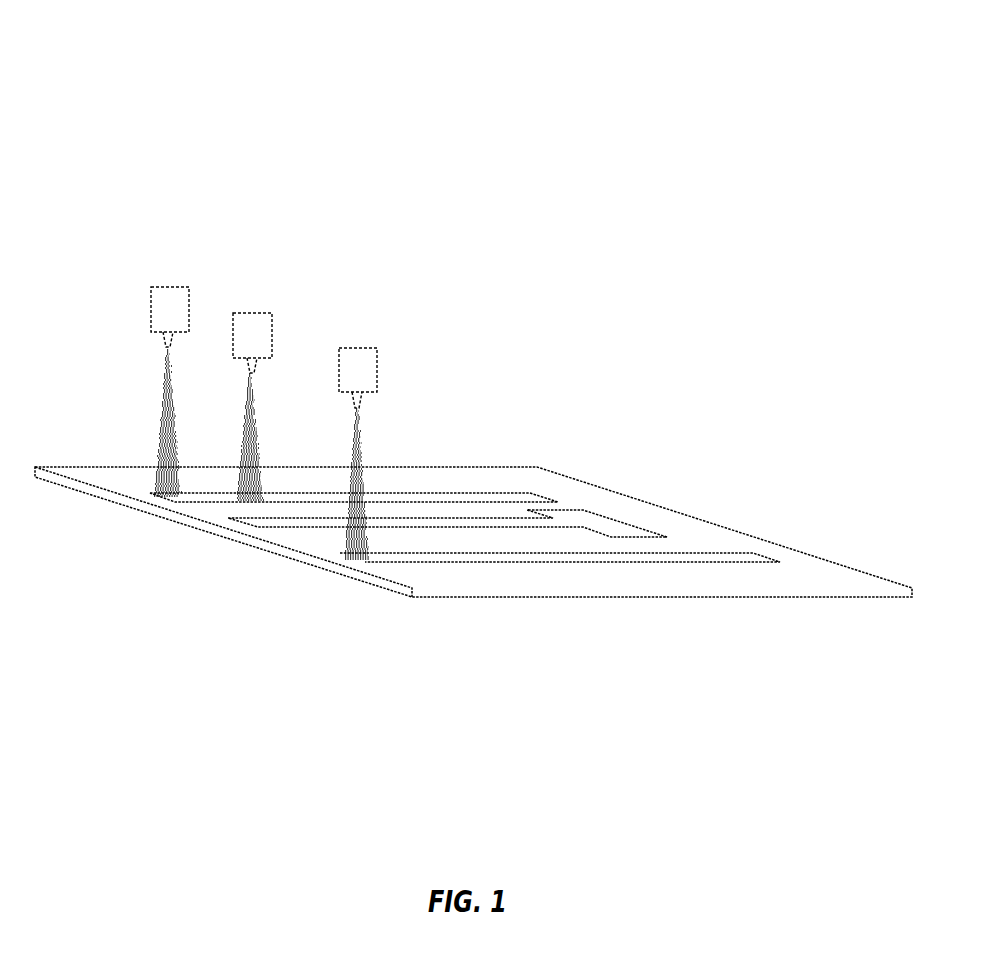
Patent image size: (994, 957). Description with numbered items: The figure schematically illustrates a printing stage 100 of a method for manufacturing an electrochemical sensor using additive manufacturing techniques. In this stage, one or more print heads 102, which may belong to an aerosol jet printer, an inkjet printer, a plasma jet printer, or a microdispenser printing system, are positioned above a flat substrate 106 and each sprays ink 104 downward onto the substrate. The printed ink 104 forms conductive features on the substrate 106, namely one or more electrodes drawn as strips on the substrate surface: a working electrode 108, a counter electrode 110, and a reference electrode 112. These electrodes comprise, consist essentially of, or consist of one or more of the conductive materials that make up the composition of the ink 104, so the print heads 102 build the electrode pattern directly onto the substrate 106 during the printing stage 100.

The printing stage 100 is at (759, 86).
The print head 102 is at (180, 303).
The ink 104 is at (165, 420).
The substrate 106 is at (830, 577).
The working electrode 108 is at (513, 505).
The counter electrode 110 is at (584, 522).
The reference electrode 112 is at (733, 557).